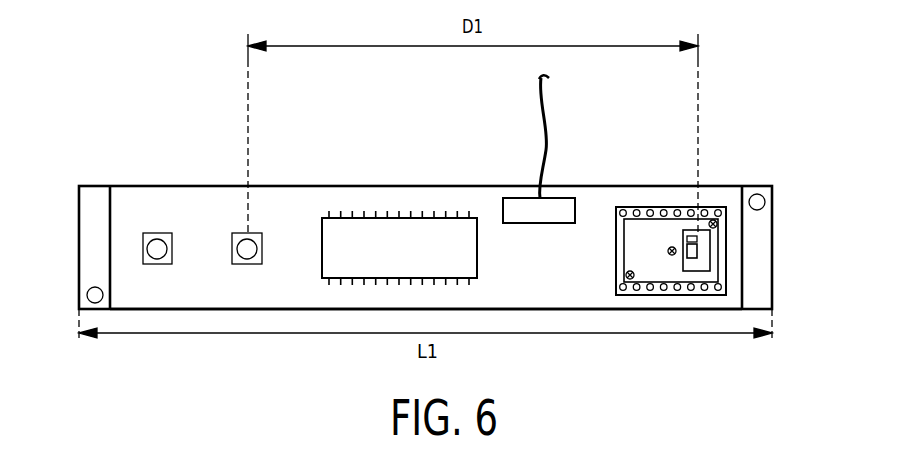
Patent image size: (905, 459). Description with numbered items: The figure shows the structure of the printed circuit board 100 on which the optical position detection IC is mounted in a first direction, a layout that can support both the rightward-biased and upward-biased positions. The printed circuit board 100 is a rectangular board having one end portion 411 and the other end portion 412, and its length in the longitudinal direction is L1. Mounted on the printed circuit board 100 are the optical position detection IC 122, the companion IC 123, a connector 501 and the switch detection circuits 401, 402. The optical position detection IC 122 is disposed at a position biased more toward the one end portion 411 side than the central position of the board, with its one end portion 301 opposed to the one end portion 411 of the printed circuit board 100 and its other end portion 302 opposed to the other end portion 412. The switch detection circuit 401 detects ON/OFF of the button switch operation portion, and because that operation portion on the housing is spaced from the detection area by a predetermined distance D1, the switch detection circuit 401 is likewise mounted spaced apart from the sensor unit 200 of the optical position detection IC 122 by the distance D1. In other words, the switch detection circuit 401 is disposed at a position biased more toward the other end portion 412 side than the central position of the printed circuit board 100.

The printed circuit board 100 is at (730, 186).
The optical position detection IC 122 is at (680, 297).
The companion IC 123 is at (477, 240).
The sensor unit 200 is at (683, 208).
The one end portion of the optical position detection IC 301 is at (726, 247).
The other end portion of the optical position detection IC 302 is at (616, 258).
The switch detection circuit 401 is at (245, 233).
The switch detection circuit 402 is at (157, 233).
The one end portion of the printed circuit board 411 is at (772, 227).
The other end portion of the printed circuit board 412 is at (79, 238).
The connector 501 is at (564, 198).